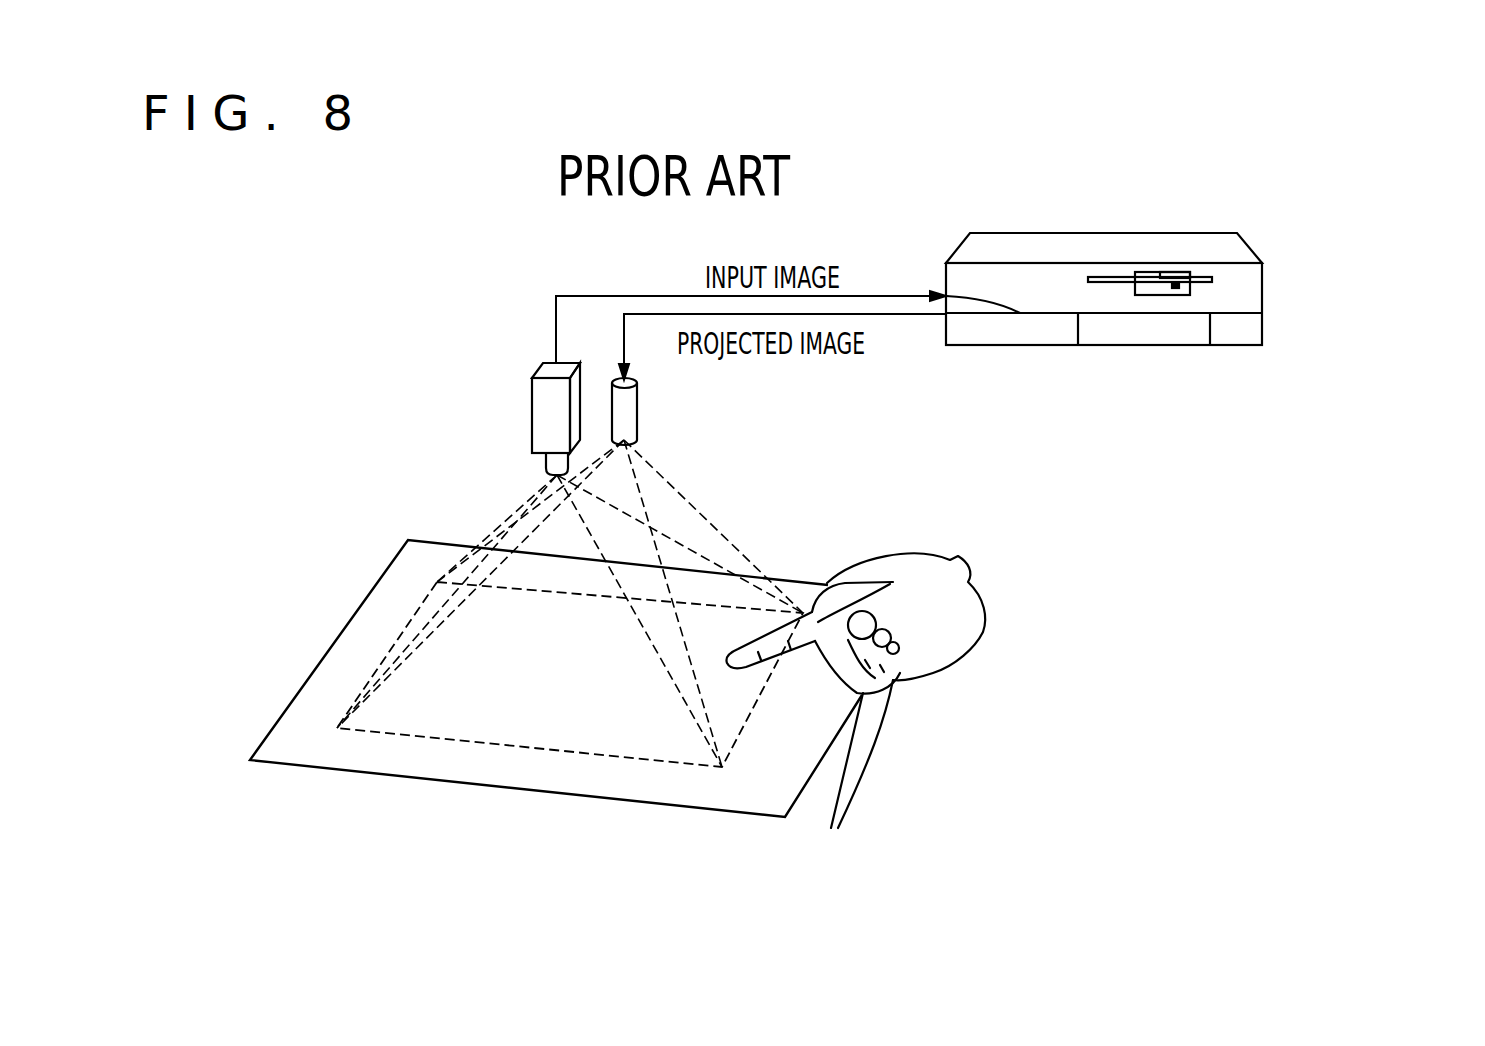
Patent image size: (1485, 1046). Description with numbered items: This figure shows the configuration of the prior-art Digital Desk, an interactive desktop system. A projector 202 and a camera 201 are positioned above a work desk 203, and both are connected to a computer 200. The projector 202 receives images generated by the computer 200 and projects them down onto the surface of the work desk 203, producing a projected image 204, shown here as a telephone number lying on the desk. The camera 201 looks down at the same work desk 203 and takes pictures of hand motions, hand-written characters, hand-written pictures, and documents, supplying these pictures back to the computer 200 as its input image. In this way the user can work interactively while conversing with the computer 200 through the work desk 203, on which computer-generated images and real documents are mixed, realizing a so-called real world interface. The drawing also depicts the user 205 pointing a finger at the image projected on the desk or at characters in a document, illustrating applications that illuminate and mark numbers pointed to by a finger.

The computer 200 is at (1077, 247).
The camera 201 is at (540, 410).
The projector 202 is at (637, 412).
The work desk 203 is at (342, 653).
The projected image 204 is at (440, 728).
The user pointing to an image projected on the desk or to characters in a document 205 is at (1099, 721).